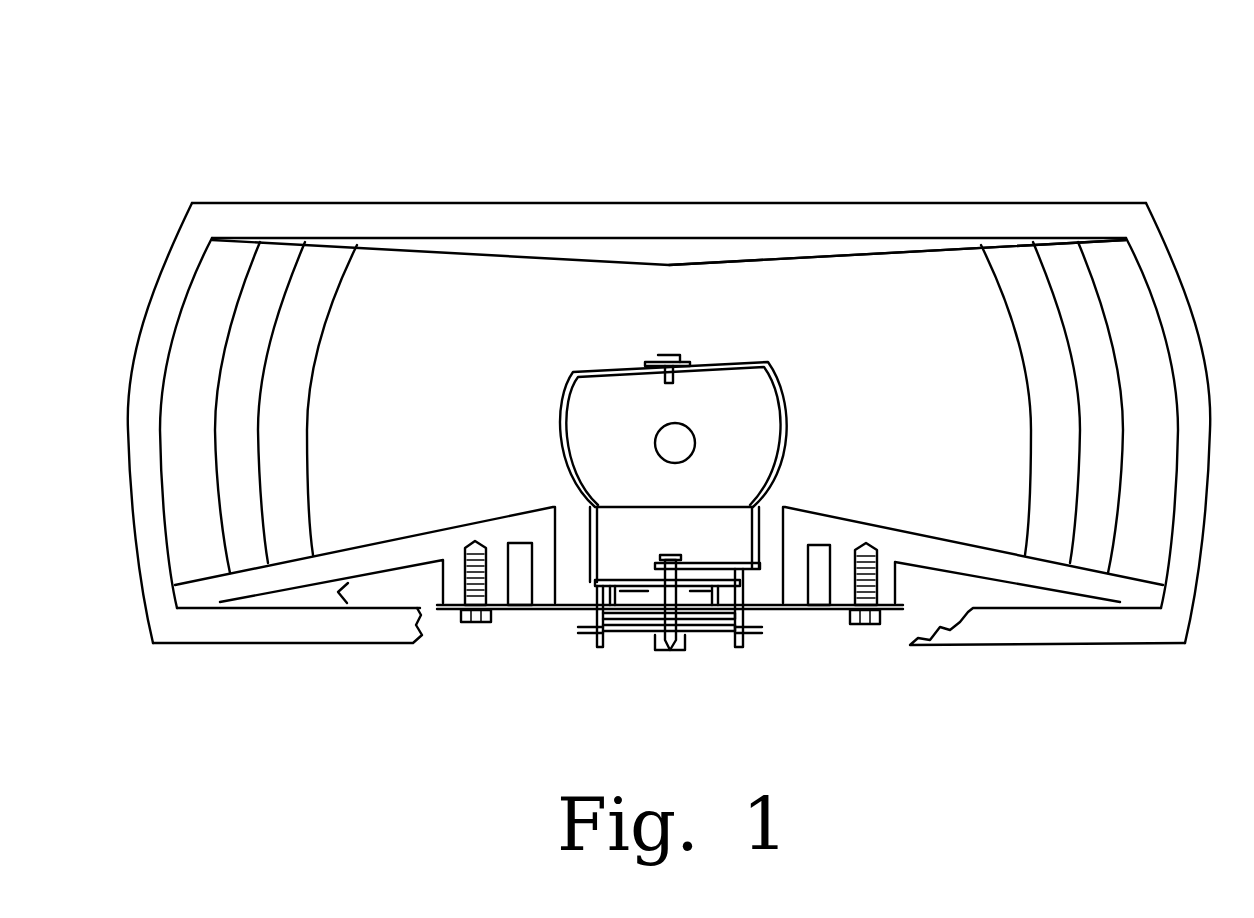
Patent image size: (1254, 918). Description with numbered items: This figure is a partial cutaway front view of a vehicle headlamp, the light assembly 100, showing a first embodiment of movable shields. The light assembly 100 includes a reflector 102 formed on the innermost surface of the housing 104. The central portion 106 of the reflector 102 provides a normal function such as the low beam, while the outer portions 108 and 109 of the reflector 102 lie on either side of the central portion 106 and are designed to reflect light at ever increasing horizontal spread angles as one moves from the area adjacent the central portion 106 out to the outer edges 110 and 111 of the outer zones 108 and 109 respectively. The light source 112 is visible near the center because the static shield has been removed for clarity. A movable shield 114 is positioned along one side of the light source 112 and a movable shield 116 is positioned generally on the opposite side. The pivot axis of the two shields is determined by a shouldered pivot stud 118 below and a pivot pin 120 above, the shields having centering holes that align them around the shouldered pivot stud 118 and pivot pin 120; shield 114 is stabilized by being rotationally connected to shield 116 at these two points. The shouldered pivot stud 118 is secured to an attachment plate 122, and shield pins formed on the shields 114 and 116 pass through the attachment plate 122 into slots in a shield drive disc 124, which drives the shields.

The light assembly 100 is at (201, 114).
The reflector 102 is at (553, 256).
The housing 104 is at (443, 204).
The central portion 106 is at (730, 242).
The outer portion 108 is at (1003, 243).
The outer portion 109 is at (330, 234).
The outer edge 110 is at (1120, 240).
The outer edge 111 is at (218, 240).
The light source 112 is at (695, 443).
The movable shield 114 is at (785, 392).
The movable shield 116 is at (562, 450).
The shouldered pivot stud 118 is at (675, 650).
The pivot pin 120 is at (668, 352).
The attachment plate 122 is at (548, 612).
The shield drive disc 124 is at (640, 635).